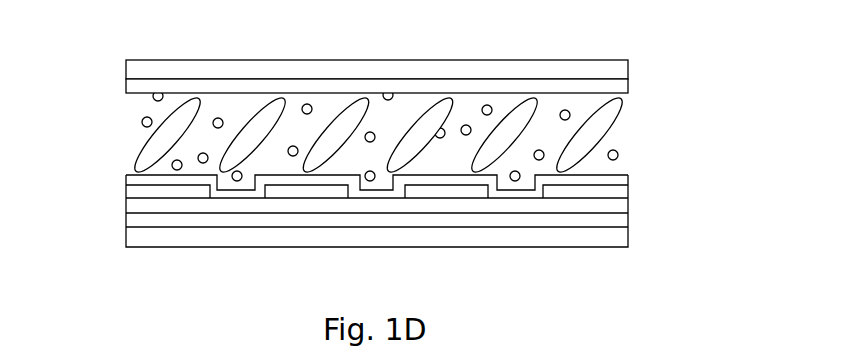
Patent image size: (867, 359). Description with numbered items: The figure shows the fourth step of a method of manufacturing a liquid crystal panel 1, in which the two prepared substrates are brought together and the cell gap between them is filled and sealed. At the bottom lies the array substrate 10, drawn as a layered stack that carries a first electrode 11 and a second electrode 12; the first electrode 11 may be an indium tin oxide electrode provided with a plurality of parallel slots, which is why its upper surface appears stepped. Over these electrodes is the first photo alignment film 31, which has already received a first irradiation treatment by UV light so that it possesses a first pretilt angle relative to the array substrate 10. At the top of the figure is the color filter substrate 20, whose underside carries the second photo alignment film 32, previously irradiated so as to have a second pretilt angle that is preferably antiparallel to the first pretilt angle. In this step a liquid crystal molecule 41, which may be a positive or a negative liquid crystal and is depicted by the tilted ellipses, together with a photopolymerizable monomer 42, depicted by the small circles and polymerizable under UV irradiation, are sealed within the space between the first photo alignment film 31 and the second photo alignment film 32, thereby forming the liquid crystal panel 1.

The liquid crystal panel 1 is at (100, 34).
The array substrate 10 is at (369, 207).
The first electrode 11 is at (616, 192).
The second electrode 12 is at (616, 220).
The color filter substrate 20 is at (628, 65).
The first photo alignment film 31 is at (616, 180).
The second photo alignment film 32 is at (628, 90).
The liquid crystal molecule 41 is at (614, 123).
The photopolymerizable monomer 42 is at (619, 156).